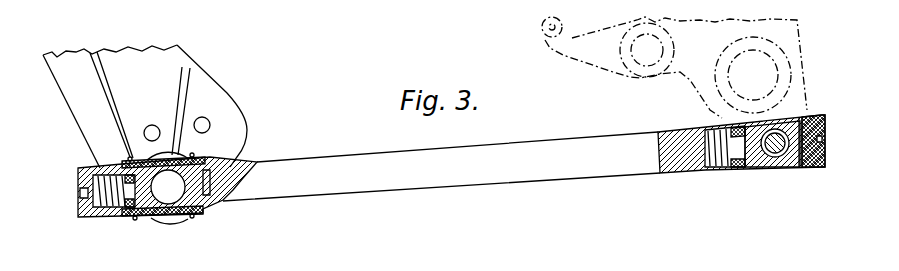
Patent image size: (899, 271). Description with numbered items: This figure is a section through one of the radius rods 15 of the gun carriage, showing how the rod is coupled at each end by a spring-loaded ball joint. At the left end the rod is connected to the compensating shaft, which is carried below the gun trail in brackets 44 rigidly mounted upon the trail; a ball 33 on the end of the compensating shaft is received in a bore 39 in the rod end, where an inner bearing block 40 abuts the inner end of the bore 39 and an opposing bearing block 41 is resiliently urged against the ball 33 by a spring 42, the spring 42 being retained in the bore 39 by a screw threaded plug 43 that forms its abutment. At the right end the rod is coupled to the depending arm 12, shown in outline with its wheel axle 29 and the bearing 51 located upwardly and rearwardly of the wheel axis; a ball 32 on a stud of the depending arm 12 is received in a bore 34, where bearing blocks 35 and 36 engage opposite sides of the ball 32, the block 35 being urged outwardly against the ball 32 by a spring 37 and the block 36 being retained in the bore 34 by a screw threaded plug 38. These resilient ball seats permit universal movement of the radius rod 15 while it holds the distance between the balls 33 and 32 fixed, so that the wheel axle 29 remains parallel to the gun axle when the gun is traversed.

The depending arm 12 is at (803, 58).
The radius rod 15 is at (477, 173).
The wheel axle 29 is at (763, 80).
The ball 32 is at (775, 157).
The ball 33 is at (172, 193).
The bore 34 is at (813, 165).
The bearing block 35 is at (755, 158).
The bearing block 36 is at (802, 163).
The spring 37 is at (722, 166).
The screw threaded plug 38 is at (827, 130).
The bore 39 is at (148, 210).
The inner bearing block 40 is at (207, 163).
The bearing block 41 is at (133, 163).
The spring 42 is at (112, 213).
The screw threaded plug 43 is at (88, 202).
The bracket 44 is at (88, 112).
The bearing 51 is at (640, 75).